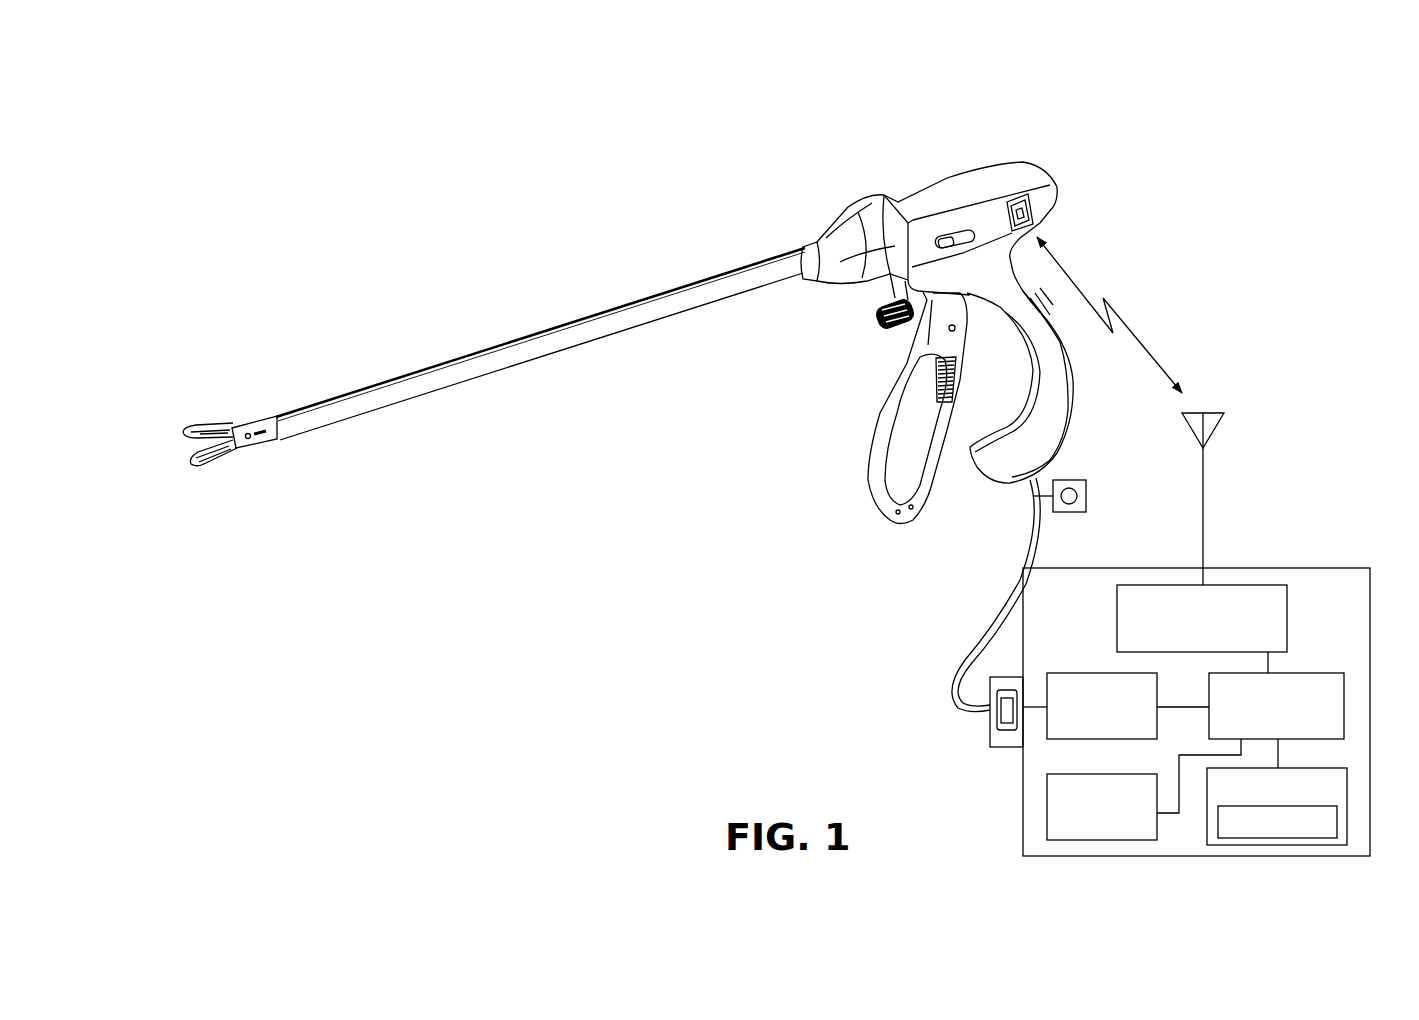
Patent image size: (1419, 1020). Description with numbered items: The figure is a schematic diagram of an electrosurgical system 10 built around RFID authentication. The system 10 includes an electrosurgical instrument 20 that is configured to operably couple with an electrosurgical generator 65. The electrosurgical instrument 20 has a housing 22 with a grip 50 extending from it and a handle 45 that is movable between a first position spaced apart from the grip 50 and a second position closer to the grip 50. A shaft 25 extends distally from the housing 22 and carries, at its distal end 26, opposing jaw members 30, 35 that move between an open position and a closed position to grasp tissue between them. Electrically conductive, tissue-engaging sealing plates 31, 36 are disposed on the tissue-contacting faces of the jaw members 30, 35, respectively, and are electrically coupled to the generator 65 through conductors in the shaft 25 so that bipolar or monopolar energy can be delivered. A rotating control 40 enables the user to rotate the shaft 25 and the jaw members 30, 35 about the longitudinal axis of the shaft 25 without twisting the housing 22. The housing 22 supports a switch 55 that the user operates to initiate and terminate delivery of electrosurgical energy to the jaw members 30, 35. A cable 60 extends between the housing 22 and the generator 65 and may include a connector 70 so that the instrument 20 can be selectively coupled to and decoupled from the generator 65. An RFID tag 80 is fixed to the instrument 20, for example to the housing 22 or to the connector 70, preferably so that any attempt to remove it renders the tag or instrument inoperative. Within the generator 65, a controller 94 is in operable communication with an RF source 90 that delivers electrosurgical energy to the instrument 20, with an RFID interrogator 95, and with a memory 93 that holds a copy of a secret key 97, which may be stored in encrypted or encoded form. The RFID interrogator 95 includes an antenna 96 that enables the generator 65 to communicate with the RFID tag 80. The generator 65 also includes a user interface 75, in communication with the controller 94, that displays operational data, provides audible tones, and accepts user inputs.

The electrosurgical system 10 is at (663, 112).
The electrosurgical instrument 20 is at (990, 158).
The housing 22 is at (930, 182).
The shaft 25 is at (500, 347).
The distal end 26 is at (212, 408).
The jaw member 30 is at (197, 425).
The sealing plate 31 is at (188, 433).
The jaw member 35 is at (195, 467).
The sealing plate 36 is at (190, 450).
The rotating control 40 is at (870, 195).
The handle 45 is at (868, 452).
The grip 50 is at (1072, 408).
The switch 55 is at (955, 242).
The cable 60 is at (948, 682).
The electrosurgical generator 65 is at (1338, 568).
The connector 70 is at (1017, 748).
The user interface 75 is at (1098, 843).
The RFID tag 80 is at (1030, 193).
The RF source 90 is at (1087, 673).
The memory 93 is at (1347, 778).
The controller 94 is at (1345, 687).
The RFID interrogator 95 is at (1232, 585).
The antenna 96 is at (1205, 488).
The secret key 97 is at (1337, 821).